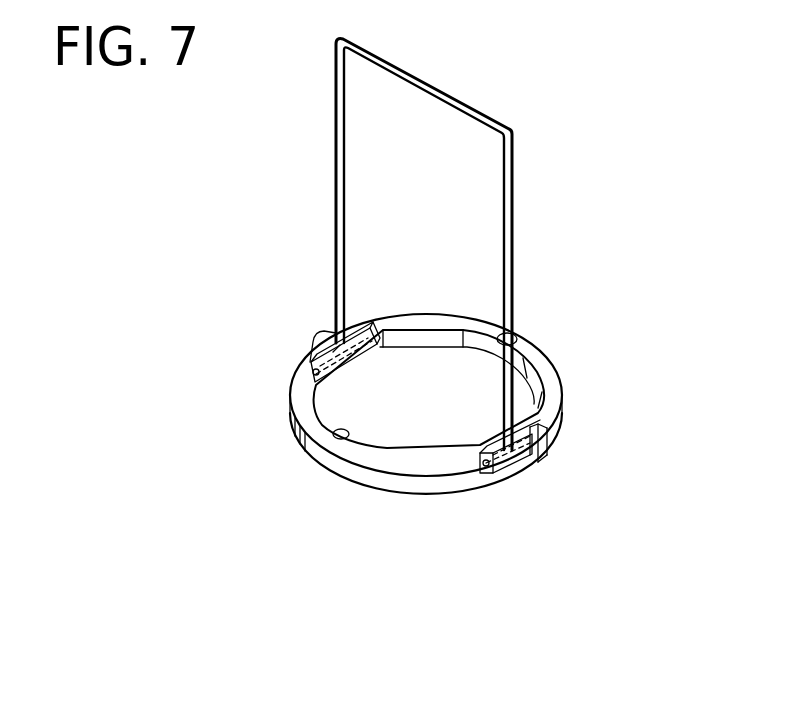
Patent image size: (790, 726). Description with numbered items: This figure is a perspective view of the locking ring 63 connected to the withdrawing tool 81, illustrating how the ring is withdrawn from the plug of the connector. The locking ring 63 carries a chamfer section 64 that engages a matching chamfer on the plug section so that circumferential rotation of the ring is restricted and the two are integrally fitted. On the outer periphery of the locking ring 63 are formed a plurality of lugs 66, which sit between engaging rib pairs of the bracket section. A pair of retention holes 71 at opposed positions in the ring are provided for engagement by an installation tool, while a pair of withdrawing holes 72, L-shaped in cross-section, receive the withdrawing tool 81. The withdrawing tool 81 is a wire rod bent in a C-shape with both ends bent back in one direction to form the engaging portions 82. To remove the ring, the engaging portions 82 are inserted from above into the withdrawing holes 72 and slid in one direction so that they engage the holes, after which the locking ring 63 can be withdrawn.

The locking ring 63 is at (460, 289).
The chamfer section 64 is at (384, 350).
The lug 66 is at (318, 332).
The retention hole 71 is at (333, 433).
The withdrawing hole 72 is at (368, 328).
The withdrawing tool 81 is at (513, 172).
The engaging portion 82 is at (347, 375).